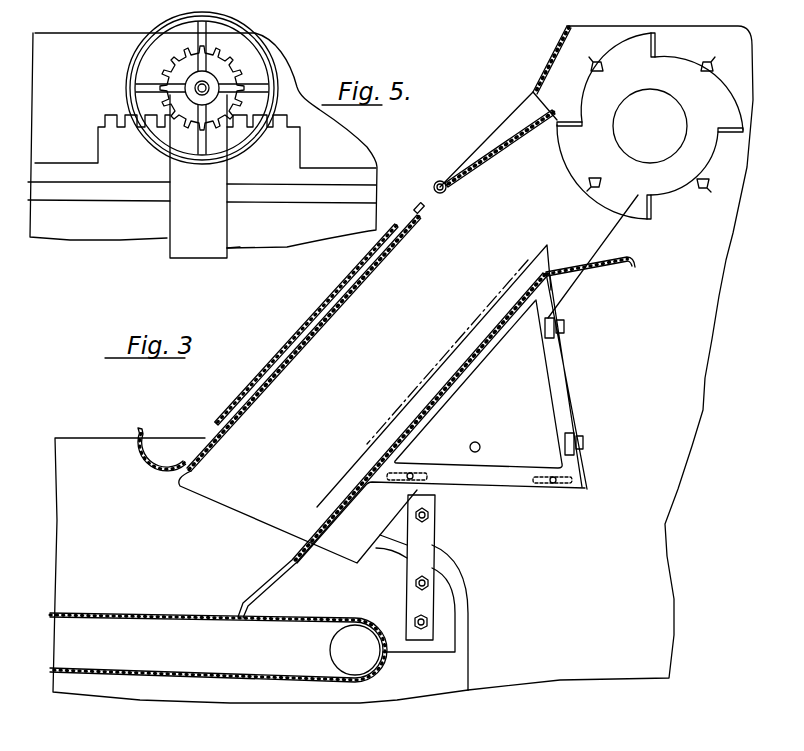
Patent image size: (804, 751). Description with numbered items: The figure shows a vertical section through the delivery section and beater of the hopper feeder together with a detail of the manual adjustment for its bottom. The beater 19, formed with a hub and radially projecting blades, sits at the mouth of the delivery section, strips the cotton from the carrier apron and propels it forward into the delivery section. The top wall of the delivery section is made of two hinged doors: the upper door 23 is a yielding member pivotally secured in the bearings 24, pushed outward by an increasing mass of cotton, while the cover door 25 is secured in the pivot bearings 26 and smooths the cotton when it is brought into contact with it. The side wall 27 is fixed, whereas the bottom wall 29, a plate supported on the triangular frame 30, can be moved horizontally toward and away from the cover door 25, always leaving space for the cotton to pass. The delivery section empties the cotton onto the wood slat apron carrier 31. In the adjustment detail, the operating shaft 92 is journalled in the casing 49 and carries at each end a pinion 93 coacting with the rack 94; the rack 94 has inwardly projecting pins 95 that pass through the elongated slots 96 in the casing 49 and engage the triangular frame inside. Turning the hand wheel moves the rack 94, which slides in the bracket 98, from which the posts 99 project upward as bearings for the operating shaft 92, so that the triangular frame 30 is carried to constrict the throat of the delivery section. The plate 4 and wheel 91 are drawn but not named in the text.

In FIG. 3, the inclined plate 4 is at (318, 500).
In FIG. 3, the beater 19 is at (672, 197).
In FIG. 3, the door 23 is at (483, 150).
In FIG. 3, the bearings 24 is at (440, 181).
In FIG. 3, the cover door 25 is at (297, 343).
In FIG. 3, the pivot bearings 26 is at (415, 212).
In FIG. 3, the side wall 27 is at (373, 277).
In FIG. 3, the bottom wall 29 is at (445, 382).
In FIG. 3, the triangular frame 30 is at (570, 380).
In FIG. 3, the wood slat apron carrier 31 is at (127, 613).
In FIG. 3, the casing 49 is at (692, 378).
In FIG. 5, the hand wheel 91 is at (133, 63).
In FIG. 3, the operating shaft 92 is at (478, 442).
In FIG. 5, the pinion 93 is at (233, 66).
In FIG. 5, the rack 94 is at (282, 155).
In FIG. 3, the pins 95 is at (411, 473).
In FIG. 3, the elongated slots 96 is at (396, 478).
In FIG. 5, the bracket 98 is at (257, 195).
In FIG. 5, the posts 99 is at (175, 212).